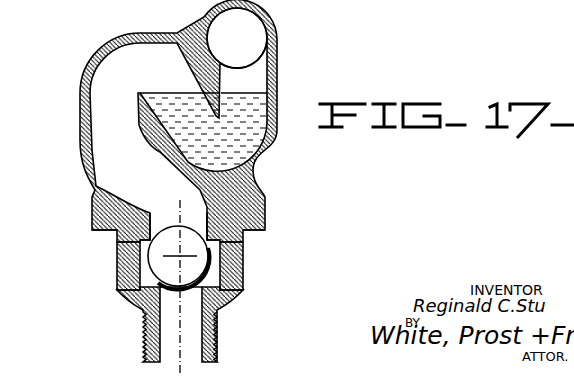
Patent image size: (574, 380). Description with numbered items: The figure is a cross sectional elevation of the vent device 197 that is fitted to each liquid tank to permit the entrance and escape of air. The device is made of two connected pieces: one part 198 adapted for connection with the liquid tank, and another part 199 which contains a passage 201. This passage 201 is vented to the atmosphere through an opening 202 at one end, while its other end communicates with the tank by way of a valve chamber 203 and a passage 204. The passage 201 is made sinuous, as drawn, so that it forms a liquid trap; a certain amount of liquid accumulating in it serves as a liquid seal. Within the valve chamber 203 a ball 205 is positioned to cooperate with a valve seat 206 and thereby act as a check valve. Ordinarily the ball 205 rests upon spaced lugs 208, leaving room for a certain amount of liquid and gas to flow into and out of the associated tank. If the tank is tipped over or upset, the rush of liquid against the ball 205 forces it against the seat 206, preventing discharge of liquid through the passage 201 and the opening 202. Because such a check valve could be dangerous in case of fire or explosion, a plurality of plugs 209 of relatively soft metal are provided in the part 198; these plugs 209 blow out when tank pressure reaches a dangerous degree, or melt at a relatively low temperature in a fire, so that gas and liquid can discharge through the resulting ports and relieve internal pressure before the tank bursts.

The vent device 197 is at (80, 117).
The part 198 is at (217, 313).
The part 199 is at (253, 215).
The passage 201 is at (257, 75).
The opening 202 is at (255, 35).
The valve chamber 203 is at (152, 258).
The passage 204 is at (165, 332).
The ball 205 is at (158, 267).
The valve seat 206 is at (150, 232).
The spaced lugs 208 is at (147, 305).
The plugs 209 is at (240, 292).